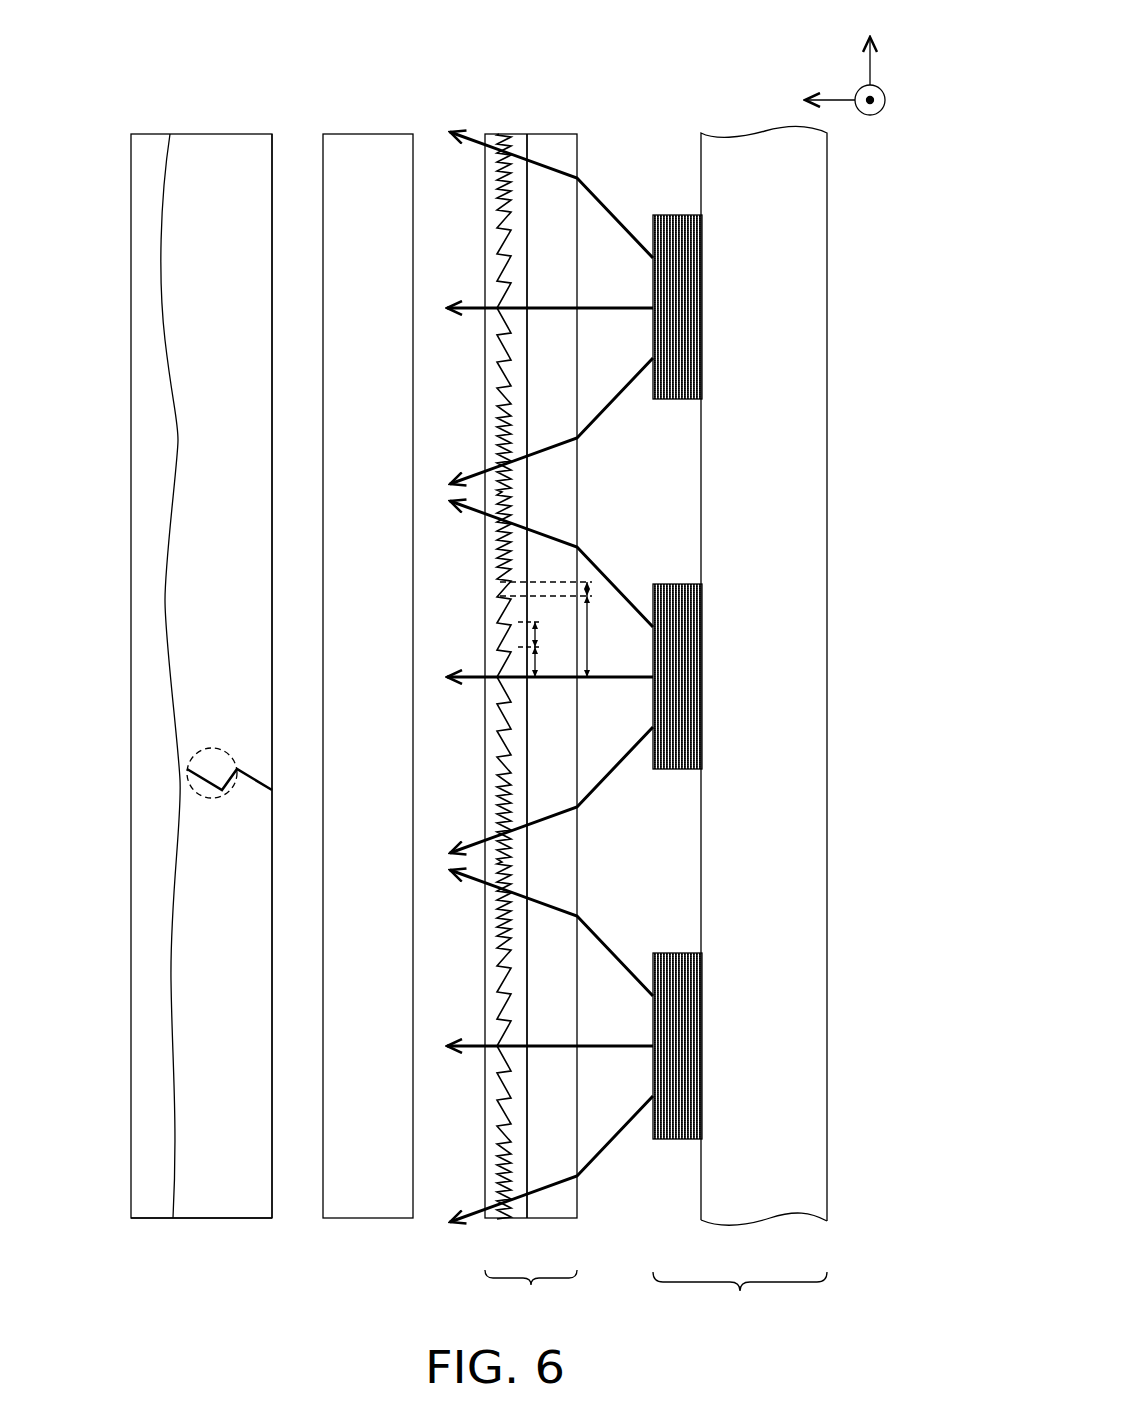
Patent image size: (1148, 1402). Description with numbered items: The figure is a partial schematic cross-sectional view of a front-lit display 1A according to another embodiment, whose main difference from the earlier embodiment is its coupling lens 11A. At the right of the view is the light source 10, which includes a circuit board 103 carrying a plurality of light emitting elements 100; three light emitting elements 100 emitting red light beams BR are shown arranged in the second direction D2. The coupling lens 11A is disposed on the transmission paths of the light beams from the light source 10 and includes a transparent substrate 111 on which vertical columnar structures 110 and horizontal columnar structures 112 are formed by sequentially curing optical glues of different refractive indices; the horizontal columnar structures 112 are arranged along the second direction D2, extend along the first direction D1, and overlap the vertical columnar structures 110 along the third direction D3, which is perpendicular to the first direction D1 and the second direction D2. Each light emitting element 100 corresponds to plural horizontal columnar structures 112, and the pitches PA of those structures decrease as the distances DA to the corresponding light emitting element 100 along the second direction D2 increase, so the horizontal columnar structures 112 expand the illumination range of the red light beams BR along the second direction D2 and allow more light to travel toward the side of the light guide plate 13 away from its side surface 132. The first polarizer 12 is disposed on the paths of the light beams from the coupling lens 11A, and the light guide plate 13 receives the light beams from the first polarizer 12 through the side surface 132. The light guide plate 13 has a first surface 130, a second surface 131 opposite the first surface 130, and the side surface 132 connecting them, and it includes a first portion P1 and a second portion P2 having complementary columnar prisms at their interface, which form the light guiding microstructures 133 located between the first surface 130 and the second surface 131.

The front-lit display 1A is at (907, 1299).
The light source 10 is at (740, 726).
The light emitting elements 100 is at (683, 399).
The circuit board 103 is at (770, 1205).
The coupling lens 11A is at (531, 1297).
The vertical columnar structures 110 is at (492, 190).
The transparent substrate 111 is at (548, 1212).
The horizontal columnar structures 112 is at (503, 236).
The first polarizer 12 is at (370, 1219).
The light guide plate 13 is at (283, 1224).
The first surface 130 is at (217, 132).
The second surface 131 is at (213, 1221).
The side surface 132 is at (274, 197).
The light guiding microstructures 133 is at (205, 752).
The first portion P1 is at (256, 382).
The second portion P2 is at (256, 997).
The pitches PA is at (591, 578).
The distances DA is at (574, 636).
The red light beam BR is at (619, 401).
The first direction D1 is at (885, 104).
The second direction D2 is at (875, 44).
The third direction D3 is at (815, 103).